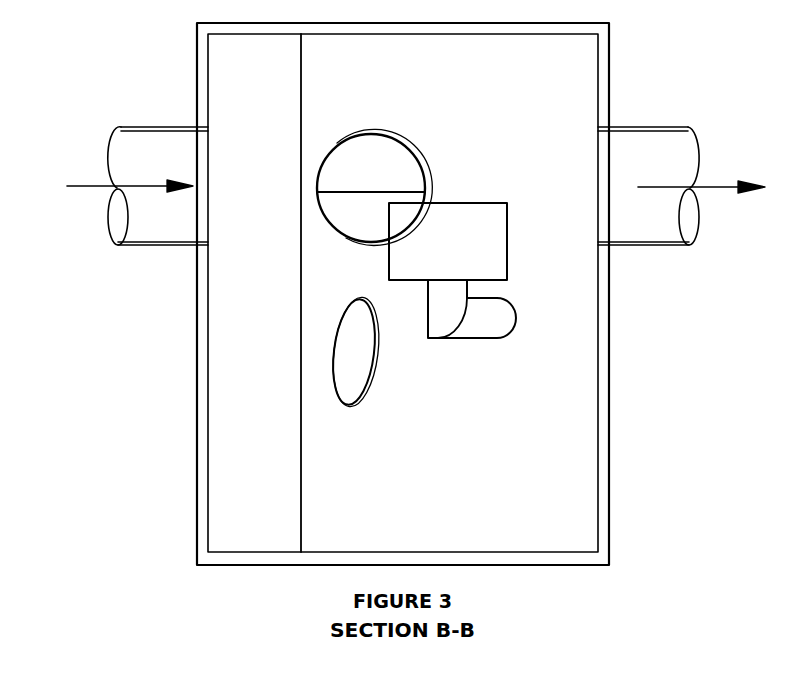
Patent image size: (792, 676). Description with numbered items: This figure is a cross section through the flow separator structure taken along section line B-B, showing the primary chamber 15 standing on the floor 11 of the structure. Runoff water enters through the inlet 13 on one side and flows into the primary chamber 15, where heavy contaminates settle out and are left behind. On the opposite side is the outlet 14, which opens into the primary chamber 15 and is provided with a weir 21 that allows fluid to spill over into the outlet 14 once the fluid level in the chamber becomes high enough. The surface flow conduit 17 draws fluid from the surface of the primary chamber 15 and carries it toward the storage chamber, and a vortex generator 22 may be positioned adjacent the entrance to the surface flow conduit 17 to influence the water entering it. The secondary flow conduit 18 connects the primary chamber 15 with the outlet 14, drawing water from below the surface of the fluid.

The floor 11 is at (437, 552).
The inlet 13 is at (137, 174).
The outlet 14 is at (380, 130).
The primary chamber 15 is at (273, 293).
The surface flow conduit 17 is at (483, 340).
The secondary flow conduit 18 is at (365, 392).
The weir 21 is at (371, 212).
The vortex generator 22 is at (478, 203).